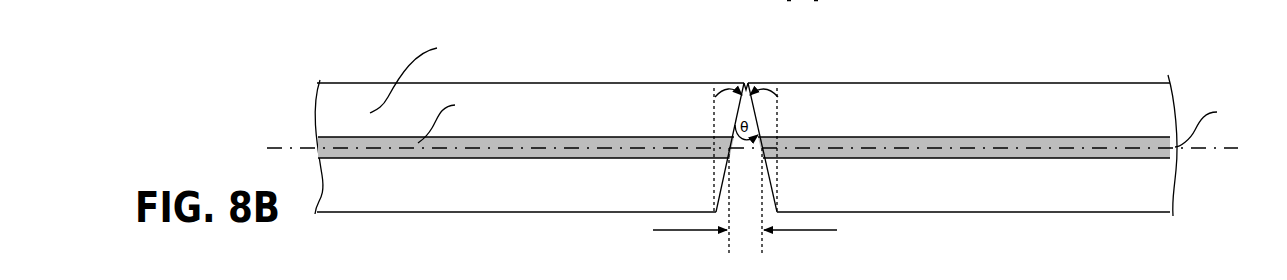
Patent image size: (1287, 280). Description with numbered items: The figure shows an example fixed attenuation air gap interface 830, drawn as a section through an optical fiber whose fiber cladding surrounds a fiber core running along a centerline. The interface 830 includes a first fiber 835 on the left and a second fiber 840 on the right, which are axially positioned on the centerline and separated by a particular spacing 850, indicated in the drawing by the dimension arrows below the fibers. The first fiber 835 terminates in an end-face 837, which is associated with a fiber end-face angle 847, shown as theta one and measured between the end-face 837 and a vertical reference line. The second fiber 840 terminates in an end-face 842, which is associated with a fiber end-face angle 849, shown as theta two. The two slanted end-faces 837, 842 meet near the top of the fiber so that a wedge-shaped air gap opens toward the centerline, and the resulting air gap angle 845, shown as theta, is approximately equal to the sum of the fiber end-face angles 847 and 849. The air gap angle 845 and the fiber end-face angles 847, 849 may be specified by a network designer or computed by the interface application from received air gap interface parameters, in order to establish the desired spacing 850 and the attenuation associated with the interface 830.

The air gap interface 830 is at (240, 62).
The first fiber 835 is at (517, 147).
The second fiber 840 is at (972, 147).
The end-face 837 is at (722, 180).
The end-face 842 is at (770, 180).
The air gap angle 845 is at (746, 83).
The fiber end-face angle 847 is at (718, 83).
The fiber end-face angle 849 is at (773, 83).
The spacing 850 is at (745, 204).